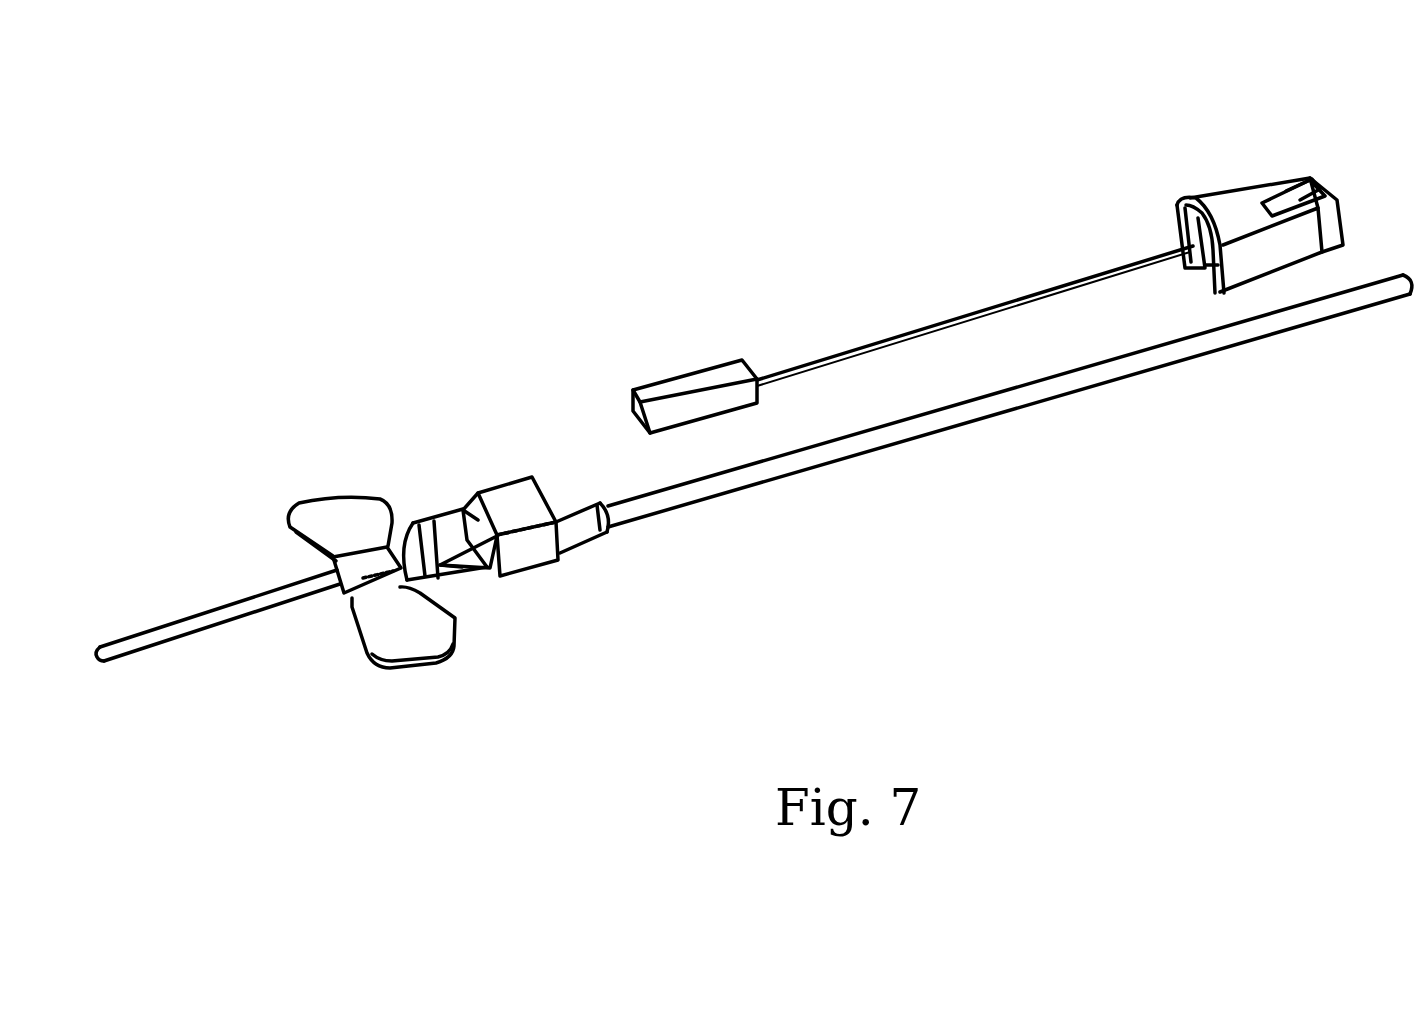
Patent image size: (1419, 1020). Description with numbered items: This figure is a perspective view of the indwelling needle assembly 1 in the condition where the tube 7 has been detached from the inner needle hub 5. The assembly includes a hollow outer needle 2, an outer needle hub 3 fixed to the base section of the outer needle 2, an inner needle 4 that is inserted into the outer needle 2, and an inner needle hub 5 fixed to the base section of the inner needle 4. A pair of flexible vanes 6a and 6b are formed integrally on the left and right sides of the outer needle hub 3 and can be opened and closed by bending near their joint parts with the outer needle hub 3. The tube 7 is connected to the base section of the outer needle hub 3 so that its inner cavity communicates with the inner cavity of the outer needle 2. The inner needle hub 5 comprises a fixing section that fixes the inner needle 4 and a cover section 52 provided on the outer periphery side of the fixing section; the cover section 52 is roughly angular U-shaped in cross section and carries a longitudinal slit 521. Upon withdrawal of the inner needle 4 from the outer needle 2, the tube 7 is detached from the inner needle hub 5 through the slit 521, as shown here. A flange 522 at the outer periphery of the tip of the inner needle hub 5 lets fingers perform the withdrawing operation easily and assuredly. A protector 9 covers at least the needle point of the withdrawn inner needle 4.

The indwelling needle assembly 1 is at (826, 152).
The outer needle 2 is at (226, 618).
The outer needle hub 3 is at (508, 502).
The inner needle 4 is at (953, 317).
The inner needle hub 5 is at (1214, 205).
The vane 6a is at (412, 640).
The vane 6b is at (340, 516).
The tube 7 is at (818, 455).
The protector 9 is at (697, 383).
The cover section 52 is at (1276, 187).
The slit 521 is at (1203, 270).
The flange 522 is at (1185, 200).